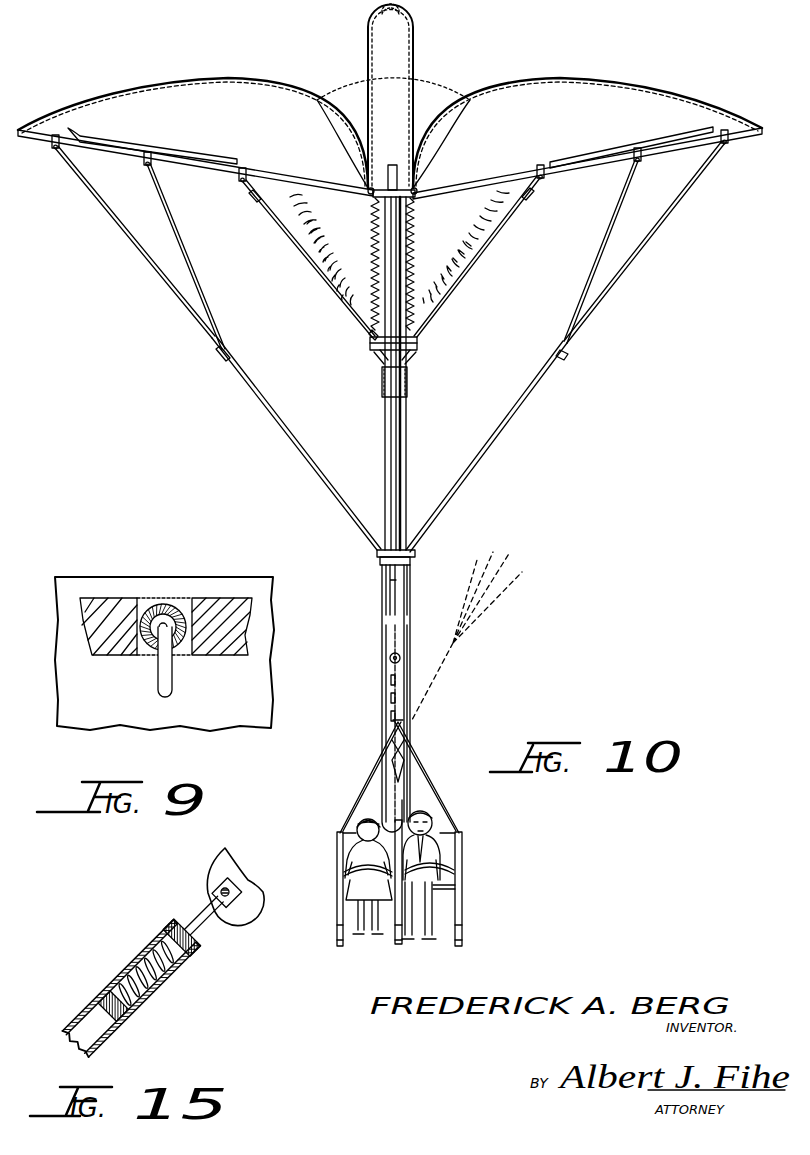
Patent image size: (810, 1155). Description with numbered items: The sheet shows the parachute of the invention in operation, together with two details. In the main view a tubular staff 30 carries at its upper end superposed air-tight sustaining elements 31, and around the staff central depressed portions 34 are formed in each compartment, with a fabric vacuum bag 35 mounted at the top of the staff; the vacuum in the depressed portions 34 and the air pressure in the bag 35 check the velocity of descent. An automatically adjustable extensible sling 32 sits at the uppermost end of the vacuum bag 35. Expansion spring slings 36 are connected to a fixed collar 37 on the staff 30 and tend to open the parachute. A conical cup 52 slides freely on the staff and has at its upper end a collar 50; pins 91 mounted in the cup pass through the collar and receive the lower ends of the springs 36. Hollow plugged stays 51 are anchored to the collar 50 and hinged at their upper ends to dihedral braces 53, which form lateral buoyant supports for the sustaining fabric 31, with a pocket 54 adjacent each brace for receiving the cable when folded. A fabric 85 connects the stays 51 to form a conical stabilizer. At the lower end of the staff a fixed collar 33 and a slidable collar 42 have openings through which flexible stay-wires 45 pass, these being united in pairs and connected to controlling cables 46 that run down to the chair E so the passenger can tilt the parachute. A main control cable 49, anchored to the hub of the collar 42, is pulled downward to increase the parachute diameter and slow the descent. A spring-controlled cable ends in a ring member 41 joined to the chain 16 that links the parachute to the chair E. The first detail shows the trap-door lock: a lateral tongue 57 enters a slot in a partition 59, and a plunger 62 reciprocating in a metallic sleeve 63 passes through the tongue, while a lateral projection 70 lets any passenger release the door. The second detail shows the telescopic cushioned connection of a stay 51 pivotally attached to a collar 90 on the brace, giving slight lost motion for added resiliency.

In FIG. 10, the chain 16 is at (393, 700).
In FIG. 10, the tubular staff 30 is at (405, 455).
In FIG. 10, the sustaining elements 31 is at (628, 103).
In FIG. 10, the extensible sling 32 is at (385, 18).
In FIG. 10, the fixed collar 33 is at (384, 560).
In FIG. 10, the central depressed portions 34 is at (346, 125).
In FIG. 10, the fabric vacuum bag 35 is at (398, 40).
In FIG. 10, the expansion spring slings 36 is at (372, 245).
In FIG. 10, the fixed collar 37 is at (368, 187).
In FIG. 10, the ring member 41 is at (390, 656).
In FIG. 10, the slidable collar 42 is at (416, 556).
In FIG. 10, the flexible stay-wires 45 is at (632, 268).
In FIG. 10, the controlling cables 46 is at (382, 605).
In FIG. 10, the main control cable 49 is at (405, 763).
In FIG. 10, the collar 50 is at (417, 341).
In FIG. 10, the stays 51 is at (503, 237).
In FIG. 15, the stays 51 is at (145, 1010).
In FIG. 10, the conical cup 52 is at (380, 383).
In FIG. 10, the dihedral braces 53 is at (178, 160).
In FIG. 10, the pocket 54 is at (665, 137).
In FIG. 9, the lateral tongue 57 is at (83, 582).
In FIG. 9, the partition 59 is at (224, 603).
In FIG. 9, the plunger 62 is at (170, 612).
In FIG. 9, the metallic sleeve 63 is at (155, 612).
In FIG. 9, the lateral projection 70 is at (168, 678).
In FIG. 10, the fabric 85 is at (473, 262).
In FIG. 15, the collar 90 is at (222, 870).
In FIG. 10, the pins 91 is at (370, 330).
In FIG. 10, the chair E is at (462, 893).